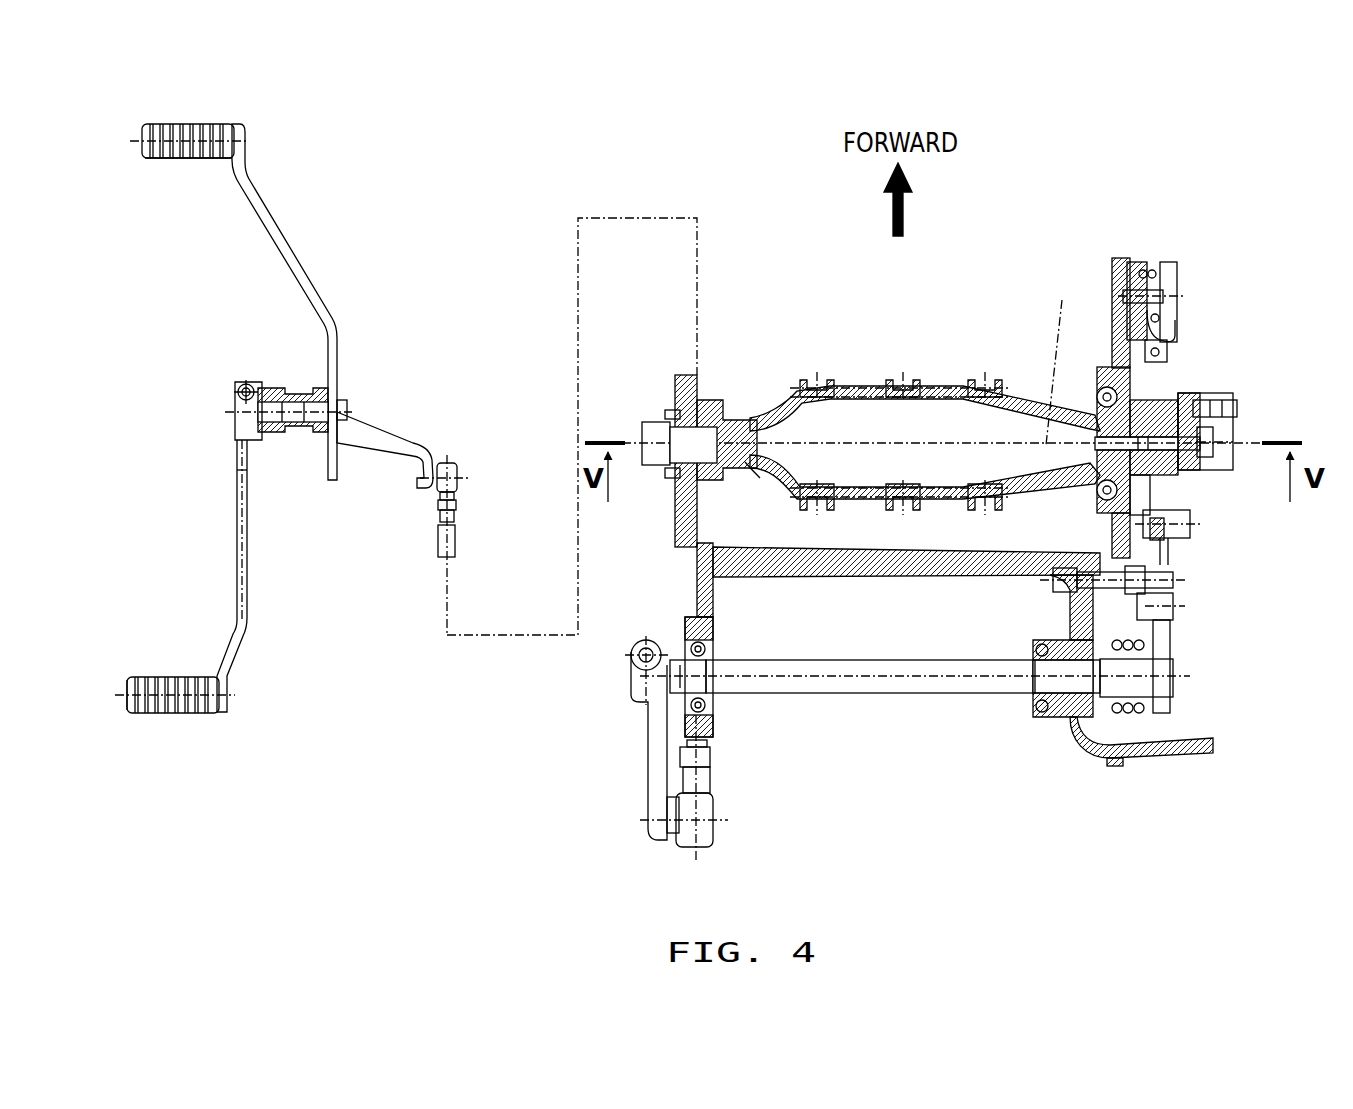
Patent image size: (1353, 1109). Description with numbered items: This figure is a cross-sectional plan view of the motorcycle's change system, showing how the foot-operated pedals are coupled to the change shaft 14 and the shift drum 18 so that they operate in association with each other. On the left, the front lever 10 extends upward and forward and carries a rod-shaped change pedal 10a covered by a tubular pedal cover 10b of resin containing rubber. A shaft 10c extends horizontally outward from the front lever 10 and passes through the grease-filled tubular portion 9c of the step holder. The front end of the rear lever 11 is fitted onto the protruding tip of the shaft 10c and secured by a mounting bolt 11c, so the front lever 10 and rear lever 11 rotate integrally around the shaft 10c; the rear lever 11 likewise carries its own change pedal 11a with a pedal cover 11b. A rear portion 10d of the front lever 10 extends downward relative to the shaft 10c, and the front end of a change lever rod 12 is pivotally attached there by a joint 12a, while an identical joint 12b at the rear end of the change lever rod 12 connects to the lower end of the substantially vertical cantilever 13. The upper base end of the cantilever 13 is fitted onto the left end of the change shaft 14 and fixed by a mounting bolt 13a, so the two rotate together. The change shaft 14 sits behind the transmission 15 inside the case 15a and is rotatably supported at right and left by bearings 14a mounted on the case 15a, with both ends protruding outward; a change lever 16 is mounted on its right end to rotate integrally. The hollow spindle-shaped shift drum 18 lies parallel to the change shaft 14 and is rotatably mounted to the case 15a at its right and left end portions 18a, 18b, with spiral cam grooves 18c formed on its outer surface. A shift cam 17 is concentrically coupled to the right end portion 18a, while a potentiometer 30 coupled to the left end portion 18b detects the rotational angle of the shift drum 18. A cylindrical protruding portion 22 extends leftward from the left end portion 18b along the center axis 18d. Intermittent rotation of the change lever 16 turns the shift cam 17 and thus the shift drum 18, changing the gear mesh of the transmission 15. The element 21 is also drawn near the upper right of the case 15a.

The tubular portion 9c is at (280, 388).
The front lever 10 is at (296, 263).
The change pedal 10a is at (142, 141).
The pedal cover 10b is at (178, 160).
The shaft 10c is at (347, 410).
The rear portion 10d is at (377, 448).
The rear lever 11 is at (237, 522).
The change pedal 11a is at (130, 696).
The pedal cover 11b is at (172, 678).
The mounting bolt 11c is at (244, 385).
The change lever rod 12 is at (456, 541).
The joint 12a is at (458, 474).
The joint 12b is at (714, 832).
The cantilever 13 is at (650, 768).
The mounting bolt 13a is at (640, 642).
The change shaft 14 is at (846, 693).
The bearings 14a is at (685, 648).
The transmission 15 is at (762, 385).
The case 15a is at (677, 530).
The change lever 16 is at (1176, 640).
The shift cam 17 is at (1184, 508).
The shift drum 18 is at (1042, 390).
The right end portion 18a is at (1150, 387).
The left end portion 18b is at (745, 465).
The cam grooves 18c is at (985, 378).
The center axis 18d is at (1068, 358).
The bracket 21 is at (1182, 292).
The protruding portion 22 is at (1175, 580).
The potentiometer 30 is at (650, 423).